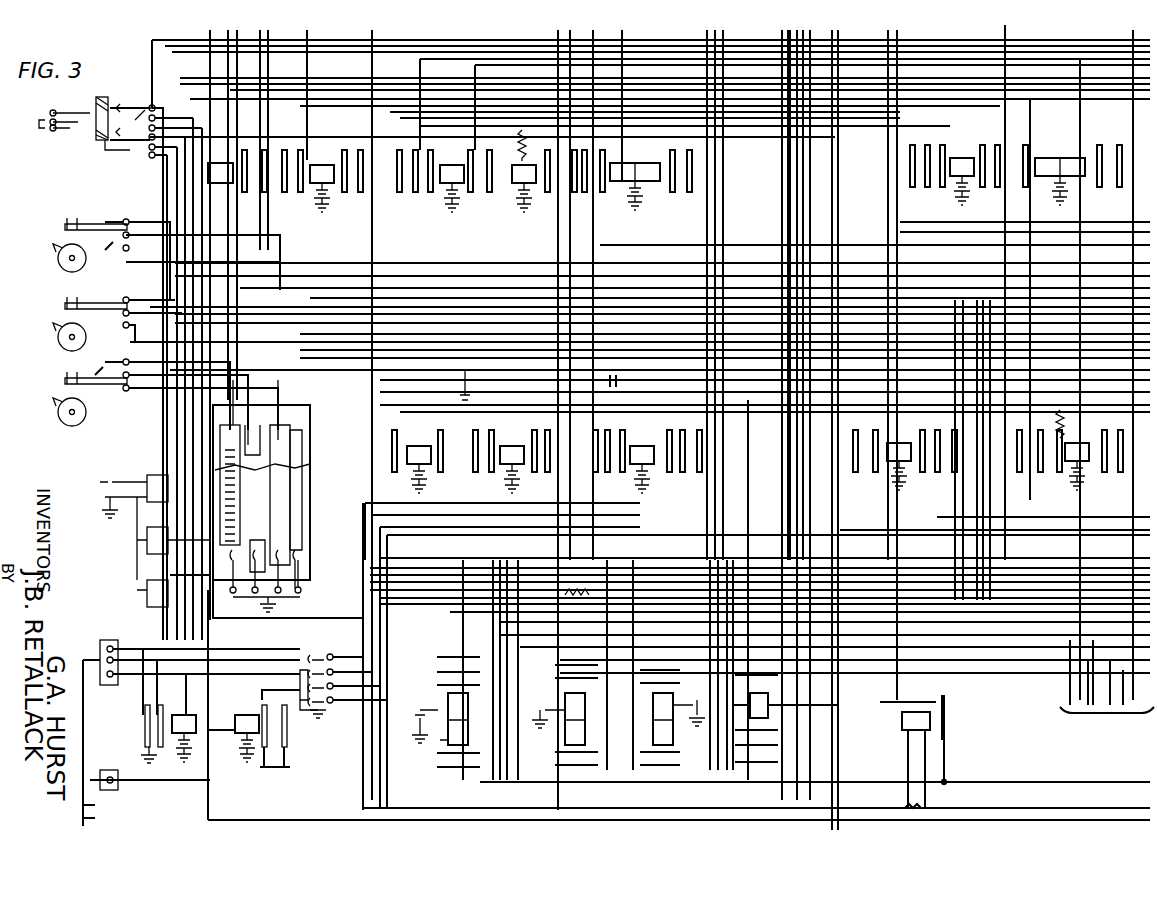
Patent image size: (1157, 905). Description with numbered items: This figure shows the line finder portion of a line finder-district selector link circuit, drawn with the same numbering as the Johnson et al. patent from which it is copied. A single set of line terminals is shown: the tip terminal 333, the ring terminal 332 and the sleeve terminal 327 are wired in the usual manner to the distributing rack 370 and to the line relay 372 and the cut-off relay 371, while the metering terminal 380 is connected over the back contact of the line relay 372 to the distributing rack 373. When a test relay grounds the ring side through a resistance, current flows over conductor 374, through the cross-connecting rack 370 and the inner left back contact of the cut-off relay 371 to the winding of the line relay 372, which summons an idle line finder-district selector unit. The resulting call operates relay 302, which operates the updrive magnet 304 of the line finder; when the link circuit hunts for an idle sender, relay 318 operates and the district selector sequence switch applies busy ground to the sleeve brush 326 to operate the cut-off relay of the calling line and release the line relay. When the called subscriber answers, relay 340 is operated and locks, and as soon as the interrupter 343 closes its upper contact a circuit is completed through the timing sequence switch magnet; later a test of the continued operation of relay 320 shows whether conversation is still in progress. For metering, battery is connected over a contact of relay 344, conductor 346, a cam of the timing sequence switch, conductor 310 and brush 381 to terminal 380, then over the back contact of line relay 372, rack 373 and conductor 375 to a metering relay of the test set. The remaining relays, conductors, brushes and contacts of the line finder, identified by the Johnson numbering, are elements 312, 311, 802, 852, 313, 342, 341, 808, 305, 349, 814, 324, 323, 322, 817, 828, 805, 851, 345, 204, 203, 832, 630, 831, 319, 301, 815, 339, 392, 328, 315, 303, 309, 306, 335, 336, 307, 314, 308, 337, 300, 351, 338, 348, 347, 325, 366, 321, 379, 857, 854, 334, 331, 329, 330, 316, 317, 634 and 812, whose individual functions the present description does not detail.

The conductor 312 is at (226, 52).
The conductor 311 is at (236, 70).
The conductor 802 is at (372, 60).
The conductor 852 is at (310, 100).
The conductor 313 is at (226, 99).
The switch contact 342 is at (140, 106).
The switch 341 is at (128, 148).
The switch contacts 808 is at (156, 143).
The relay 305 is at (222, 183).
The interrupter 343 is at (90, 232).
The conductor 349 is at (203, 249).
The conductor 814 is at (274, 242).
The relay 302 is at (315, 183).
The relay 324 is at (448, 183).
The resistor 323 is at (510, 170).
The relay 322 is at (537, 180).
The conductor 817 is at (640, 90).
The relay 340 is at (628, 166).
The conductor 828 is at (794, 90).
The conductor 805 is at (888, 90).
The conductor 851 is at (834, 108).
The conductor 345 is at (896, 122).
The conductor 204 is at (784, 150).
The conductor 203 is at (791, 167).
The conductor 832 is at (894, 182).
The conductor 630 is at (845, 235).
The conductor 831 is at (1008, 26).
The conductor 319 is at (1011, 115).
The relay 301 is at (965, 158).
The relay 318 is at (1045, 178).
The conductor 815 is at (662, 255).
The bell 339 is at (97, 314).
The conductor 392 is at (178, 338).
The bell 328 is at (109, 392).
The stepping switch 315 is at (226, 448).
The relay 303 is at (157, 475).
The updrive magnet 304 is at (165, 527).
The wiper 309 is at (227, 553).
The contact bank 306 is at (278, 486).
The contact bank 335 is at (300, 515).
The wiper 336 is at (300, 560).
The conductor 307 is at (300, 590).
The conductor 314 is at (220, 582).
The wiper contacts 308 is at (255, 590).
The relay 337 is at (158, 607).
The relay 300 is at (511, 410).
The relay 351 is at (420, 446).
The relay 338 is at (635, 465).
The conductor 346 is at (732, 511).
The conductor 348 is at (1070, 344).
The conductor 347 is at (1096, 397).
The relay 325 is at (895, 455).
The conductor 366 is at (992, 505).
The relay 321 is at (1098, 466).
The conductor 379 is at (1015, 537).
The conductor 857 is at (678, 557).
The conductor 854 is at (906, 557).
The distributing rack 370 is at (108, 639).
The ring terminal 332 is at (305, 648).
The tip terminal 333 is at (305, 650).
The switch 334 is at (339, 650).
The conductor 331 is at (360, 662).
The sleeve terminal 327 is at (298, 679).
The sleeve brush 326 is at (353, 698).
The conductor 310 is at (365, 688).
The metering terminal 380 is at (313, 716).
The brush 381 is at (357, 706).
The relay 329 is at (458, 693).
The relay 330 is at (575, 693).
The relay 316 is at (663, 693).
The resistor 317 is at (563, 595).
The relay 344 is at (765, 700).
The relay 320 is at (902, 720).
The conductor 634 is at (825, 622).
The conductor 812 is at (1123, 604).
The cut-off relay 371 is at (171, 722).
The distributing rack 373 is at (108, 769).
The conductor 375 is at (107, 804).
The conductor 374 is at (107, 820).
The line relay 372 is at (236, 732).